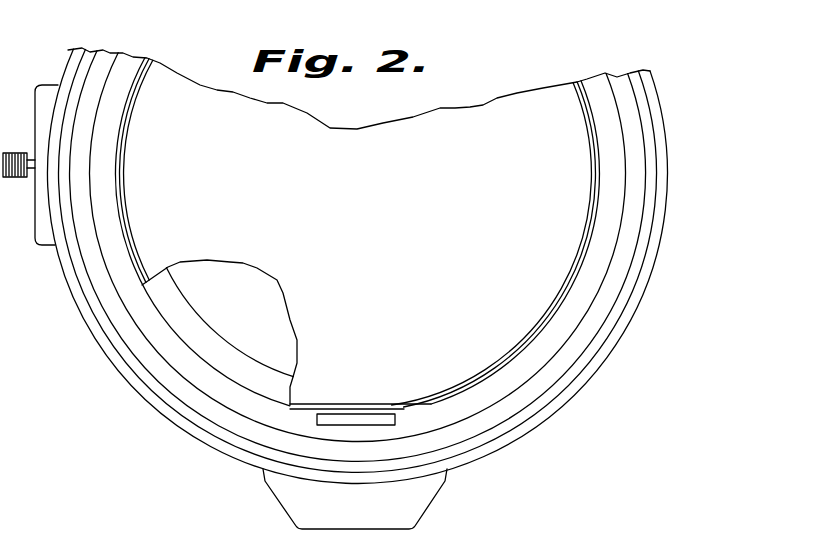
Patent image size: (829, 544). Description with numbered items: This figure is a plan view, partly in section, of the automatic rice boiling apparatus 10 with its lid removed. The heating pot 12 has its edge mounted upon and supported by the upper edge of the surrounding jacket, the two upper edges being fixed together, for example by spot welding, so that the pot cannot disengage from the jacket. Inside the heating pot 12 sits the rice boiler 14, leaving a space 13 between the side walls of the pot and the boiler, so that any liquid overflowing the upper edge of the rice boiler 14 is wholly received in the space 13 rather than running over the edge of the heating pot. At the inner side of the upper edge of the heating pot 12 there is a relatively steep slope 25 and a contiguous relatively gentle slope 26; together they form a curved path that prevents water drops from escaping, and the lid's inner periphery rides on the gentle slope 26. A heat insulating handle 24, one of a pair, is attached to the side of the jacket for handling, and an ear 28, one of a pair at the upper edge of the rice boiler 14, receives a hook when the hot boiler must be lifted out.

The automatic rice boiling apparatus 10 is at (374, 119).
The heating pot 12 is at (127, 333).
The space 13 is at (100, 187).
The rice boiler 14 is at (188, 102).
The handle 24 is at (411, 503).
The steep slope 25 is at (163, 391).
The gentle slope 26 is at (194, 398).
The ear 28 is at (361, 421).